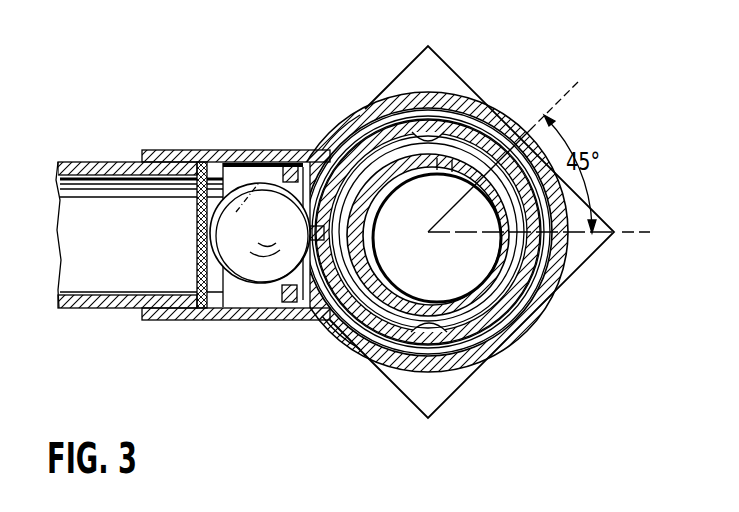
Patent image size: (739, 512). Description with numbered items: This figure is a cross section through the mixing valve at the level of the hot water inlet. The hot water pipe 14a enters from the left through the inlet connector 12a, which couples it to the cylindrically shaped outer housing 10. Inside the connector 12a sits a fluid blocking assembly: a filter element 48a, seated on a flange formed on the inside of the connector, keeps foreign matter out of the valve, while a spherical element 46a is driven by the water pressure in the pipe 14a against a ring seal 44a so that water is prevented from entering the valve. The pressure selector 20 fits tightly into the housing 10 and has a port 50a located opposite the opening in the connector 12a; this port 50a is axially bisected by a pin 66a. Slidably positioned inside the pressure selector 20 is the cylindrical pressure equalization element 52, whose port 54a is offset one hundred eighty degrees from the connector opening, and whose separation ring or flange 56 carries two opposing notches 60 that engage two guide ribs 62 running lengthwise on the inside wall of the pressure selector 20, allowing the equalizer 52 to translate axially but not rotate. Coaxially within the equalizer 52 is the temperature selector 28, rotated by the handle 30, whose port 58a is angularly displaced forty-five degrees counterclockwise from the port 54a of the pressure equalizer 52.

The housing 10 is at (557, 259).
The inlet connector 12a is at (217, 150).
The pipe 14a is at (85, 163).
The pressure selector 20 is at (483, 134).
The temperature selector 28 is at (374, 266).
The handle 30 is at (428, 398).
The ring seal 44a is at (296, 176).
The spherical element 46a is at (238, 234).
The filter element 48a is at (197, 221).
The port 50a is at (337, 162).
The pressure equalization element 52 is at (478, 318).
The port 54a is at (500, 294).
The pressure chamber separation ring 56 is at (510, 308).
The port 58a is at (450, 172).
The notch 60 is at (407, 140).
The guide rib 62 is at (433, 128).
The pin 66a is at (307, 235).